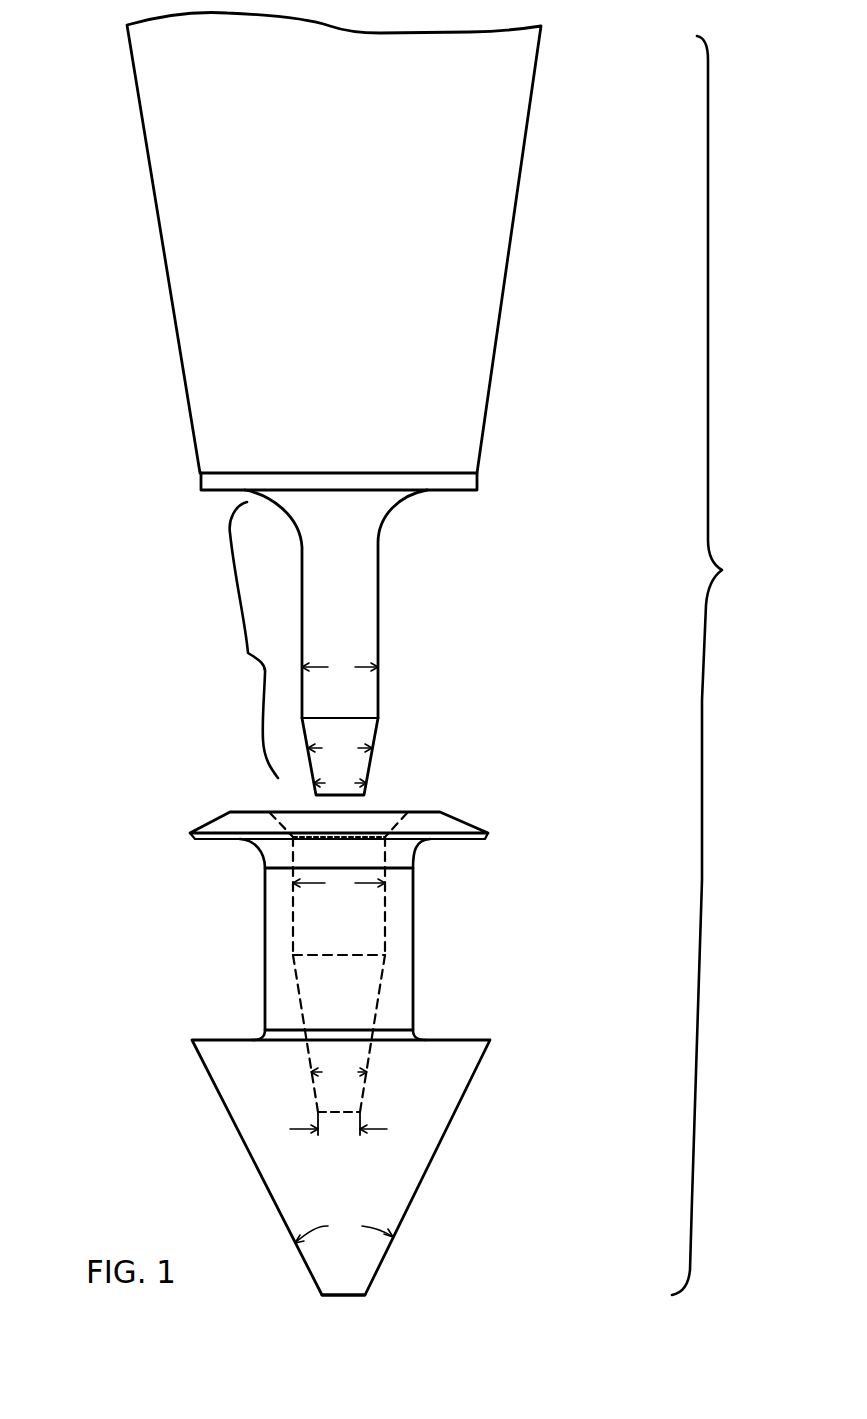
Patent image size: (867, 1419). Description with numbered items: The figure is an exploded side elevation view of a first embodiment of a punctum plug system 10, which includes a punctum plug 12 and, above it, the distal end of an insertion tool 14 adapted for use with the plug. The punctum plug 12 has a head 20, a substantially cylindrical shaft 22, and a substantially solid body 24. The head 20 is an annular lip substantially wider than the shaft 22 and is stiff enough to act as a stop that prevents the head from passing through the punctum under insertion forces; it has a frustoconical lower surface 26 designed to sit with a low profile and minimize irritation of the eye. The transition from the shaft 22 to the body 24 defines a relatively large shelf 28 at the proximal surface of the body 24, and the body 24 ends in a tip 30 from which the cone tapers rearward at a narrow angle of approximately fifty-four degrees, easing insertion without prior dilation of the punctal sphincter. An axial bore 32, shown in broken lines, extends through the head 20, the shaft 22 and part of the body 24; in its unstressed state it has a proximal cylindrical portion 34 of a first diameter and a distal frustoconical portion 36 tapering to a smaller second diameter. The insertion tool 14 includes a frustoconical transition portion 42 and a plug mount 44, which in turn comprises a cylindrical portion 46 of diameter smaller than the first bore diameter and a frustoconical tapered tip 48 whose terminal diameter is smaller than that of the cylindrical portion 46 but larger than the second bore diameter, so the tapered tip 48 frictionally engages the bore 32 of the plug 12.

The punctum plug system 10 is at (722, 665).
The punctum plug 12 is at (555, 842).
The insertion tool 14 is at (617, 158).
The head 20 is at (213, 817).
The shaft 22 is at (265, 932).
The body 24 is at (225, 1110).
The frustoconical lower surface 26 is at (212, 852).
The shelf 28 is at (228, 1040).
The tip 30 is at (343, 1297).
The axial bore 32 is at (372, 947).
The proximal cylindrical portion 34 is at (348, 907).
The distal frustoconical portion 36 is at (353, 1013).
The frustoconical transition portion 42 is at (168, 192).
The plug mount 44 is at (238, 640).
The cylindrical portion 46 is at (378, 640).
The tapered tip 48 is at (373, 763).